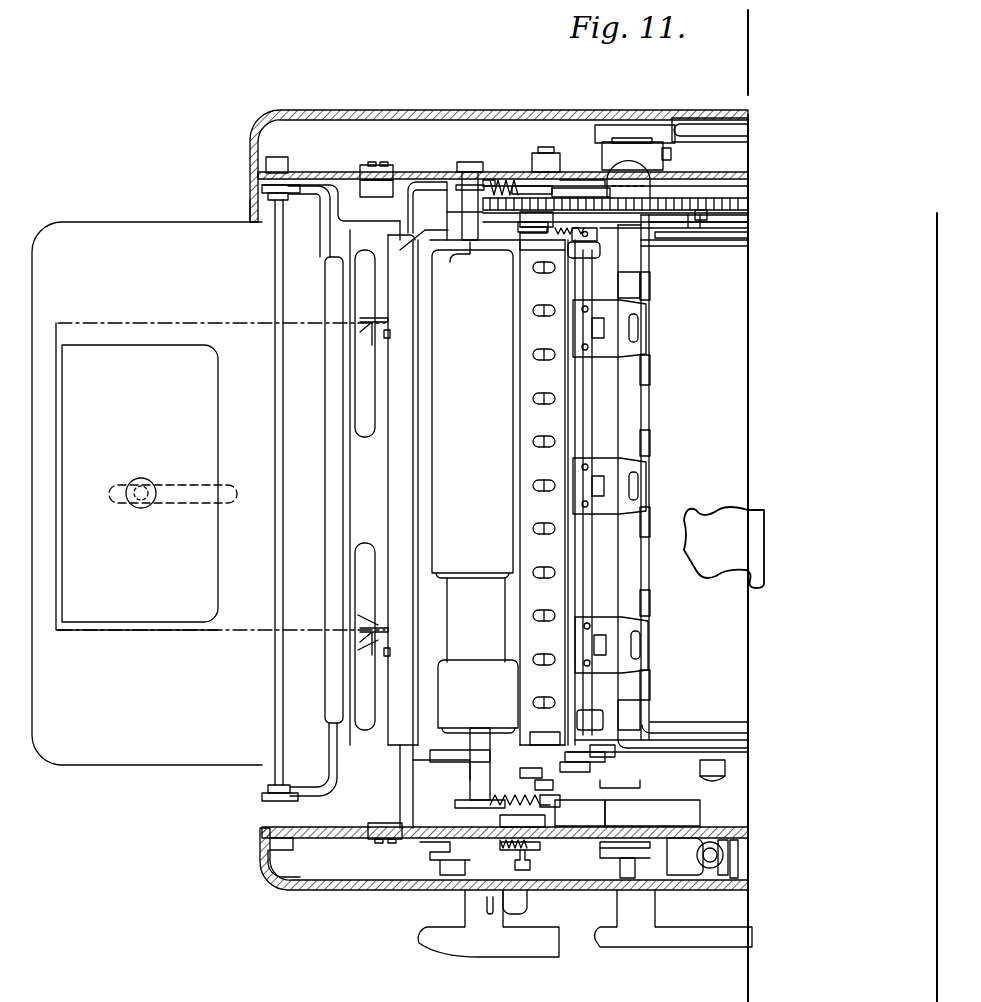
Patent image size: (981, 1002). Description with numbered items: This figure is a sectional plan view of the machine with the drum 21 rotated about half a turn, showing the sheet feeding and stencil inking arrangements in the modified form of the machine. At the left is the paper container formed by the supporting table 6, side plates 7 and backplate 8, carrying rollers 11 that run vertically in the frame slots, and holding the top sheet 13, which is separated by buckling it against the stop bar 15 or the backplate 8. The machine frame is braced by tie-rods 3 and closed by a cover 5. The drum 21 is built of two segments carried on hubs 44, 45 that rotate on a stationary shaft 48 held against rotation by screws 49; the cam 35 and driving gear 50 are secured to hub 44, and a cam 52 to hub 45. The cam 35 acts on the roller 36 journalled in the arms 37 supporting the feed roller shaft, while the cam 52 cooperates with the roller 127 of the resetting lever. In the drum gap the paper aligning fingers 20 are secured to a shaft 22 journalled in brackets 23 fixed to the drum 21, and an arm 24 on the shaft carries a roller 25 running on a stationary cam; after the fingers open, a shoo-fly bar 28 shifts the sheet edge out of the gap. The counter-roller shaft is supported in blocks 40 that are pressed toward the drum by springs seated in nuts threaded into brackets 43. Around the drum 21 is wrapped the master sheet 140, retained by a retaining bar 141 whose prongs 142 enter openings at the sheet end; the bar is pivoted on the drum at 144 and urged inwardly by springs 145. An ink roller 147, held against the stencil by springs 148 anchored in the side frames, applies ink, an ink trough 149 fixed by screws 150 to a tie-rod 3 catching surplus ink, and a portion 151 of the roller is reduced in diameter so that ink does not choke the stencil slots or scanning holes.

The tie-rod 3 is at (410, 794).
The cover 5 is at (400, 893).
The supporting table 6 is at (58, 596).
The side plates 7 is at (383, 318).
The backplate 8 is at (140, 750).
The rollers 11 is at (372, 176).
The top sheet 13 is at (125, 323).
The stop bar 15 is at (327, 437).
The paper aligning fingers 20 is at (632, 345).
The drum 21 is at (748, 560).
The shaft 22 is at (588, 410).
The brackets 23 is at (590, 250).
The arm 24 is at (548, 222).
The roller 25 is at (525, 212).
The shoo-fly bar 28 is at (625, 288).
The cam 35 is at (577, 196).
The roller 36 is at (600, 160).
The arms 37 is at (425, 182).
The blocks 40 is at (683, 858).
The brackets 43 is at (725, 876).
The hub 44 is at (727, 238).
The hub 45 is at (700, 734).
The stationary shaft 48 is at (627, 142).
The screws 49 is at (664, 148).
The driving gear 50 is at (487, 180).
The cam 52 is at (656, 812).
The roller 127 is at (545, 792).
The master sheet 140 is at (512, 597).
The retaining bar 141 is at (545, 232).
The prongs 142 is at (547, 400).
The pivot 144 is at (520, 228).
The springs 145 is at (545, 168).
The ink roller 147 is at (430, 432).
The springs 148 is at (496, 186).
The ink trough 149 is at (430, 582).
The screws 150 is at (383, 334).
The reduced-diameter portion 151 is at (380, 632).